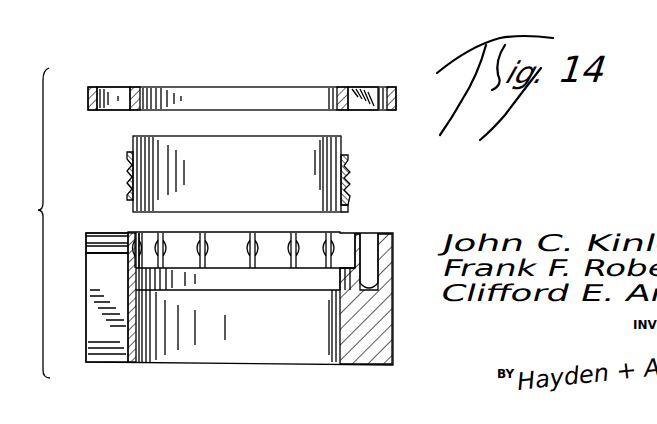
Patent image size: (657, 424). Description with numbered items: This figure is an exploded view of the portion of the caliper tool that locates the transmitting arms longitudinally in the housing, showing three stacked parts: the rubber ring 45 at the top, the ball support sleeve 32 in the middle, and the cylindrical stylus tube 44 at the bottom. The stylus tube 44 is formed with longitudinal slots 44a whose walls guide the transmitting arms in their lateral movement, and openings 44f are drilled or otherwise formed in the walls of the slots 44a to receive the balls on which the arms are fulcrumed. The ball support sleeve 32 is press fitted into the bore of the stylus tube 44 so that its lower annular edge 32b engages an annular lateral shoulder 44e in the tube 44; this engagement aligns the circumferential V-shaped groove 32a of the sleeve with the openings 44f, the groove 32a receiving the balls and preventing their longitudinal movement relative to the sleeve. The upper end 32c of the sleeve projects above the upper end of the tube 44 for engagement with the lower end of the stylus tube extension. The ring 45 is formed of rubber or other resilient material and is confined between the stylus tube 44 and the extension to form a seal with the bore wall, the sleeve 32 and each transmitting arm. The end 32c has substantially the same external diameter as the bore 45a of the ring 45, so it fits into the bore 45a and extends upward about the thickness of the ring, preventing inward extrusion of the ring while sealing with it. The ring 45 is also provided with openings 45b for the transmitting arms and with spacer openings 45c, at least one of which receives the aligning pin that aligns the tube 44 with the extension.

The ball support sleeve 32 is at (280, 171).
The circumferential V-shaped groove 32a is at (350, 176).
The lower annular edge 32b is at (345, 215).
The upper end 32c is at (344, 142).
The stylus tube 44 is at (367, 353).
The slots 44a is at (252, 266).
The annular lateral shoulder 44e is at (342, 284).
The openings 44f is at (92, 252).
The rubber ring 45 is at (137, 87).
The bore 45a is at (236, 100).
The openings 45b is at (104, 87).
The spacer openings 45c is at (371, 98).